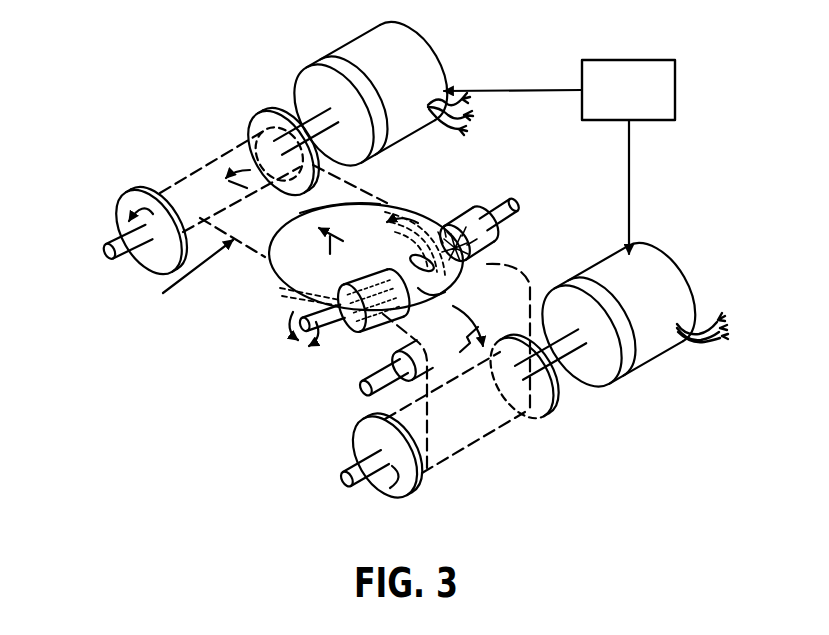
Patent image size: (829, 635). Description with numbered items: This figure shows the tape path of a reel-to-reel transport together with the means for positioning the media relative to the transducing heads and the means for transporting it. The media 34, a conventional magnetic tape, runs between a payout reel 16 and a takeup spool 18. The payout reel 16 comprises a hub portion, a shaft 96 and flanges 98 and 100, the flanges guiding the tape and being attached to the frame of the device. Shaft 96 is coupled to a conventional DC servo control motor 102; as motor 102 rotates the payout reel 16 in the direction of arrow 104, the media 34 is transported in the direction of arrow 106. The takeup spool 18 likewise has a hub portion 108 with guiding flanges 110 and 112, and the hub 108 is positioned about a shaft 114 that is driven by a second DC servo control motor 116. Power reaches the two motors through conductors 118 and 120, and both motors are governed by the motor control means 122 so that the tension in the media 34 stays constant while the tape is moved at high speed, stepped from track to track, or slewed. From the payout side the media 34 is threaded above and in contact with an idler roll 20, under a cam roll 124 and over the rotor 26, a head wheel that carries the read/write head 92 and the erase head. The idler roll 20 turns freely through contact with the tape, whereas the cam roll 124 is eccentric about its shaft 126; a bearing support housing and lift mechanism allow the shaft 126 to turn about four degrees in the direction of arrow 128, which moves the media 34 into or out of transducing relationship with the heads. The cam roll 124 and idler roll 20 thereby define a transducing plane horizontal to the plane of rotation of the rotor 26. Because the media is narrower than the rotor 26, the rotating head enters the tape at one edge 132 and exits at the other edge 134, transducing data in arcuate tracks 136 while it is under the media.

The payout reel 16 is at (199, 203).
The takeup spool 18 is at (466, 425).
The idler roll 20 is at (384, 362).
The rotor 26 is at (303, 246).
The media 34 is at (188, 278).
The read/write head 92 is at (431, 314).
The shaft 96 is at (98, 246).
The flange 98 is at (152, 206).
The flange 100 is at (264, 114).
The DC servo control motor 102 is at (401, 85).
The arrow 104 is at (109, 198).
The arrow 106 is at (354, 266).
The hub portion 108 is at (482, 450).
The flange 110 is at (392, 475).
The flange 112 is at (542, 382).
The shaft 114 is at (352, 499).
The DC servo control motor 116 is at (635, 314).
The conductor 118 is at (473, 96).
The conductor 120 is at (729, 308).
The motor control means 122 is at (549, 159).
The cam roll 124 is at (502, 233).
The shaft 126 is at (528, 195).
The arrow 128 is at (297, 322).
The edge 132 is at (252, 255).
The edge 134 is at (367, 192).
The arcuate tracks 136 is at (416, 262).